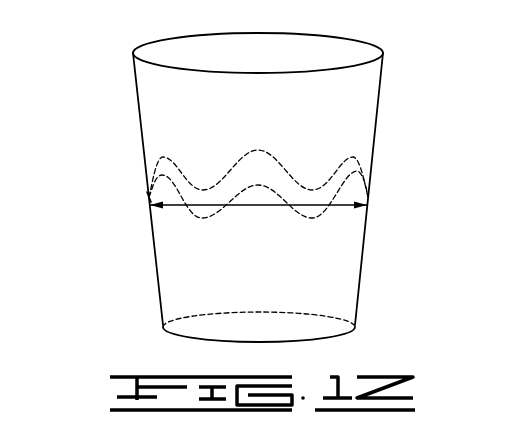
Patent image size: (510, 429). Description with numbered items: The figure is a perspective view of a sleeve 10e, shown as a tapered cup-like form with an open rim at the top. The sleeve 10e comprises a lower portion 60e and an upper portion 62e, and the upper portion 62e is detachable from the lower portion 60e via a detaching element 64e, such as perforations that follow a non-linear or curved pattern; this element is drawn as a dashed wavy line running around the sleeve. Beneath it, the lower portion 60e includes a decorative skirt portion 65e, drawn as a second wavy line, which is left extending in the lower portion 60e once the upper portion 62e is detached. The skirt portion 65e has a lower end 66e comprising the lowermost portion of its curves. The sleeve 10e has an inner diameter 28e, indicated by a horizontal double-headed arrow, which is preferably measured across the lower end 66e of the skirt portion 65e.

The sleeve 10e is at (208, 187).
The lower portion 60e is at (155, 260).
The upper portion 62e is at (137, 75).
The detaching element 64e is at (355, 173).
The decorative skirt portion 65e is at (357, 188).
The lower end 66e is at (150, 202).
The inner diameter 28e is at (343, 206).